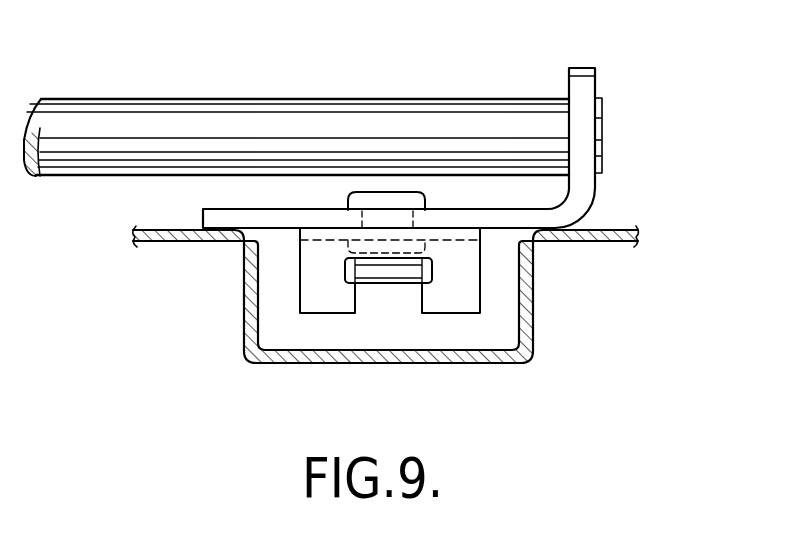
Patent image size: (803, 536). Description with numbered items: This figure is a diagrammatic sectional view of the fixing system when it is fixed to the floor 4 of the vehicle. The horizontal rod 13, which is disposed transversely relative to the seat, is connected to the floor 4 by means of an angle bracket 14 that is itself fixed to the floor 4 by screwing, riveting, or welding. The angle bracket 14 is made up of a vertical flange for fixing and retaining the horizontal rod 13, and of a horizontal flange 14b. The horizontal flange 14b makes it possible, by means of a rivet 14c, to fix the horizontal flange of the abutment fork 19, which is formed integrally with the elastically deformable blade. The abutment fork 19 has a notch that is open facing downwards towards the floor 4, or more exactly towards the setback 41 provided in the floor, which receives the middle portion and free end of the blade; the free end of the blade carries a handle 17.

The floor 4 is at (166, 243).
The horizontal rod 13 is at (153, 128).
The angle bracket 14 is at (620, 201).
The horizontal flange 14b is at (260, 220).
The rivet 14c is at (383, 203).
The handle 17 is at (390, 270).
The abutment fork 19 is at (494, 285).
The setback 41 is at (437, 332).